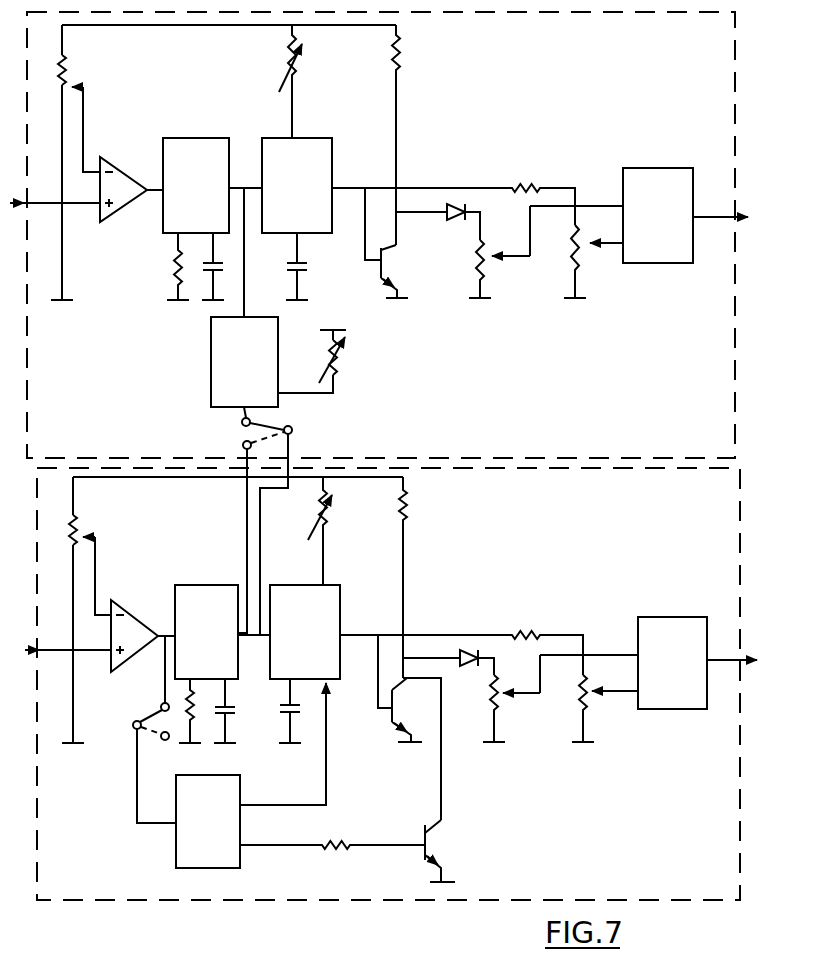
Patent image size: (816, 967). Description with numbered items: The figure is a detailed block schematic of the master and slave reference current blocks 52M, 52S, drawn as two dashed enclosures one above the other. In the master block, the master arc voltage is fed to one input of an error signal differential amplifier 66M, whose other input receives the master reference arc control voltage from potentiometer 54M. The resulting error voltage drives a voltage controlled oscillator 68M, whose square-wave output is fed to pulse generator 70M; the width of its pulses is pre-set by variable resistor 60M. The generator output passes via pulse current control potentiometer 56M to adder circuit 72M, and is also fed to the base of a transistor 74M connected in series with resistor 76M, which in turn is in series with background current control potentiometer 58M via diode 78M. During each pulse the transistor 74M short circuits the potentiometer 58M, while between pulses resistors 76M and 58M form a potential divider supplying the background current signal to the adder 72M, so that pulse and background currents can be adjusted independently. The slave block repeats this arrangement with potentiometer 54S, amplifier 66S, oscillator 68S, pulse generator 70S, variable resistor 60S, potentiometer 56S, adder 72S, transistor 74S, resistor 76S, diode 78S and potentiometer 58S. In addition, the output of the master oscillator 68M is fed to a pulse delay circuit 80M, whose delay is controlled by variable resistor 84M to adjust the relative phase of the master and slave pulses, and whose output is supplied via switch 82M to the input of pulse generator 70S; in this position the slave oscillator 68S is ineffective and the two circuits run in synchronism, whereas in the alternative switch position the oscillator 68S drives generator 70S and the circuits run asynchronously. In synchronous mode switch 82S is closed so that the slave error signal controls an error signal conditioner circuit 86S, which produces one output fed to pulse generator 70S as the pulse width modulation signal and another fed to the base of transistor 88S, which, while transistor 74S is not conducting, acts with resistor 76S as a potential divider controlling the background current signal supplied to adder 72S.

The master reference current block 52M is at (722, 386).
The slave reference current block 52S is at (718, 530).
The potentiometer 54M is at (72, 73).
The potentiometer 54S is at (82, 530).
The pulse current control potentiometer 56M is at (582, 266).
The pulse current control potentiometer 56S is at (590, 713).
The background current control potentiometer 58M is at (476, 259).
The background current control potentiometer 58S is at (498, 713).
The variable resistor 60M is at (300, 73).
The variable resistor 60S is at (330, 527).
The error signal differential amplifier 66M is at (126, 200).
The error signal differential amplifier 66S is at (127, 620).
The voltage controlled oscillator 68M is at (165, 151).
The voltage controlled oscillator 68S is at (203, 592).
The pulse generator 70M is at (330, 152).
The pulse generator 70S is at (343, 617).
The adder circuit 72M is at (662, 173).
The adder circuit 72S is at (670, 622).
The transistor 74M is at (374, 272).
The transistor 74S is at (388, 728).
The resistor 76M is at (401, 55).
The resistor 76S is at (410, 508).
The diode 78M is at (455, 203).
The diode 78S is at (470, 648).
The pulse delay circuit 80M is at (210, 380).
The switch 82M is at (295, 431).
The switch 82S is at (133, 722).
The variable resistor 84M is at (345, 371).
The error signal conditioner circuit 86S is at (180, 846).
The transistor 88S is at (421, 832).